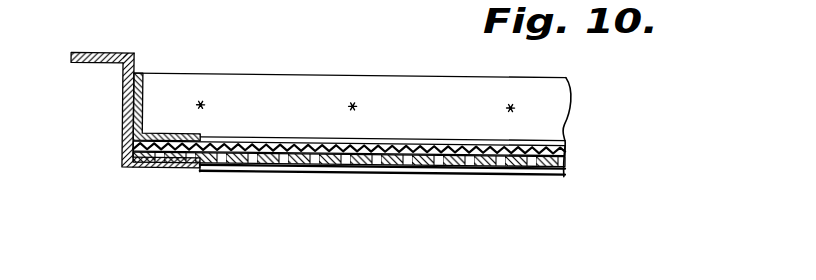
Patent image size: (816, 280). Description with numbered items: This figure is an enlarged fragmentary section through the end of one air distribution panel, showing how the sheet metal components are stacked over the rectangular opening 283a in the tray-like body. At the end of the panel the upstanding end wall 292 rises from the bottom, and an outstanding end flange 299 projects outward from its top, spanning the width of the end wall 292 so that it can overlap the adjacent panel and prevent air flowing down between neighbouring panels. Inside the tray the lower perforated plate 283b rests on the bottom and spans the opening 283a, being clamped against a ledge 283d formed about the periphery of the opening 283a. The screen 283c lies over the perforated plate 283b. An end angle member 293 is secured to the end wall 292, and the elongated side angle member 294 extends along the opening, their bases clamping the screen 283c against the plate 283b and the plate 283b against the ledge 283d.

The end flange 299 is at (82, 53).
The end wall 292 is at (122, 114).
The end angle member 293 is at (138, 92).
The side angle member 294 is at (285, 107).
The opening 283a is at (203, 163).
The perforated plate 283b is at (292, 162).
The screen 283c is at (372, 143).
The ledge 283d is at (153, 165).